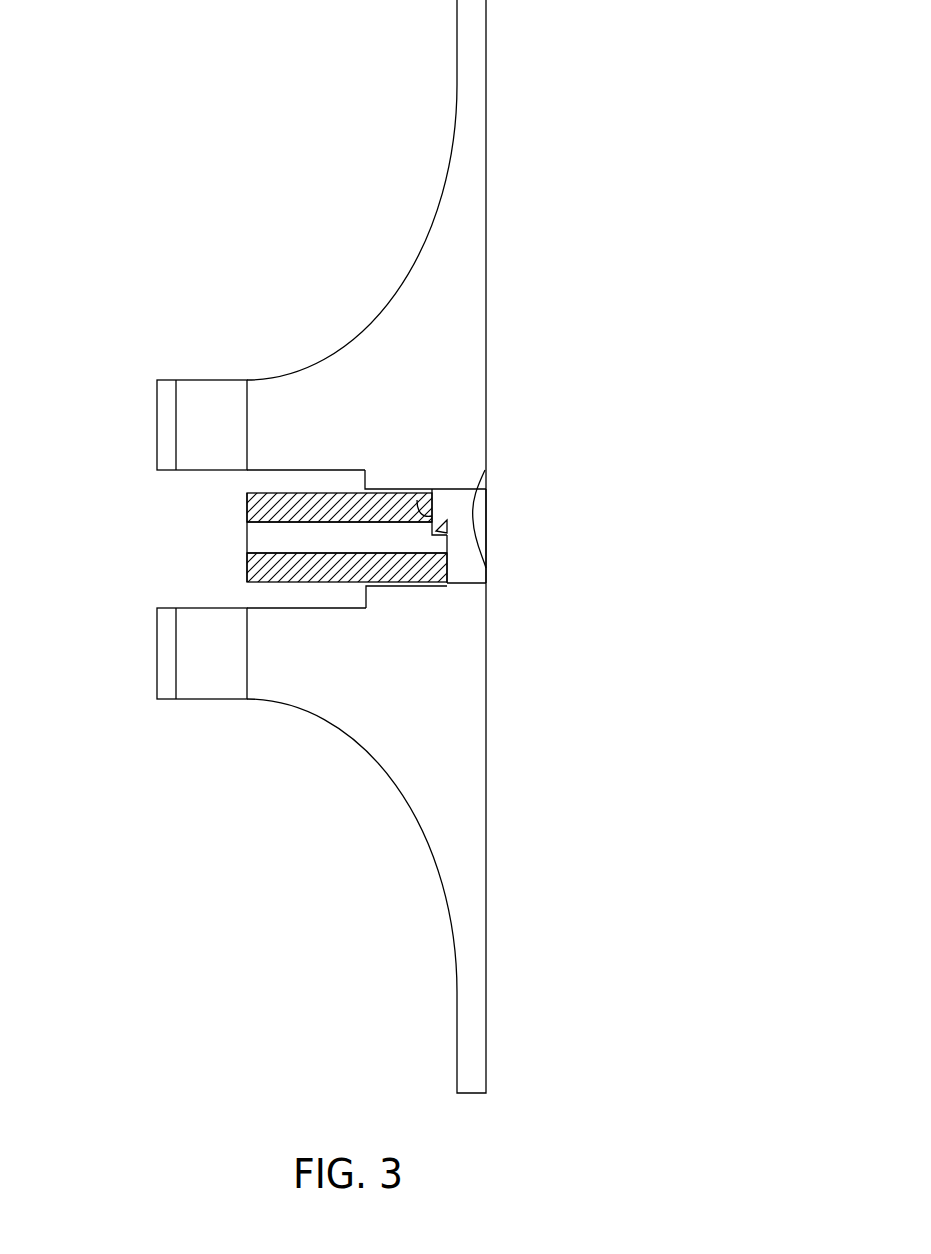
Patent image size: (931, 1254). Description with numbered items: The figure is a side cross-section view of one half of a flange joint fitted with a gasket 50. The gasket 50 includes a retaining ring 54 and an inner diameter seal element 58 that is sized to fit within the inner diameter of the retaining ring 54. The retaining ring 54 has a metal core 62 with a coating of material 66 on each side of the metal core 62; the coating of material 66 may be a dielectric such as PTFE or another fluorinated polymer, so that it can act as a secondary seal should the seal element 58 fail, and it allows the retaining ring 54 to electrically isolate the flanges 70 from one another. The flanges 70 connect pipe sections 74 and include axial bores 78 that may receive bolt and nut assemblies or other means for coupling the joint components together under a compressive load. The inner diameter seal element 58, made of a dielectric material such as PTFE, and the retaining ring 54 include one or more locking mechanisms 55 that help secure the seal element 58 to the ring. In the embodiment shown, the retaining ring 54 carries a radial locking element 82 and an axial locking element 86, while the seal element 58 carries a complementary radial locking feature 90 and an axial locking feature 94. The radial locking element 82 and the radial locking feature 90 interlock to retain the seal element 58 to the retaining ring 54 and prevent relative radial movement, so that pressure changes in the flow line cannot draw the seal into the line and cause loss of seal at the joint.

The gasket 50 is at (226, 538).
The retaining ring 54 is at (240, 552).
The locking mechanism 55 is at (441, 473).
The inner diameter seal element 58 is at (487, 540).
The metal core 62 is at (255, 533).
The coating of material 66 is at (247, 505).
The flange 70 is at (157, 420).
The pipe section 74 is at (470, 83).
The axial bore 78 is at (210, 378).
The radial locking element 82 is at (448, 540).
The axial locking element 86 is at (417, 500).
The radial locking feature 90 is at (430, 533).
The axial locking feature 94 is at (485, 470).